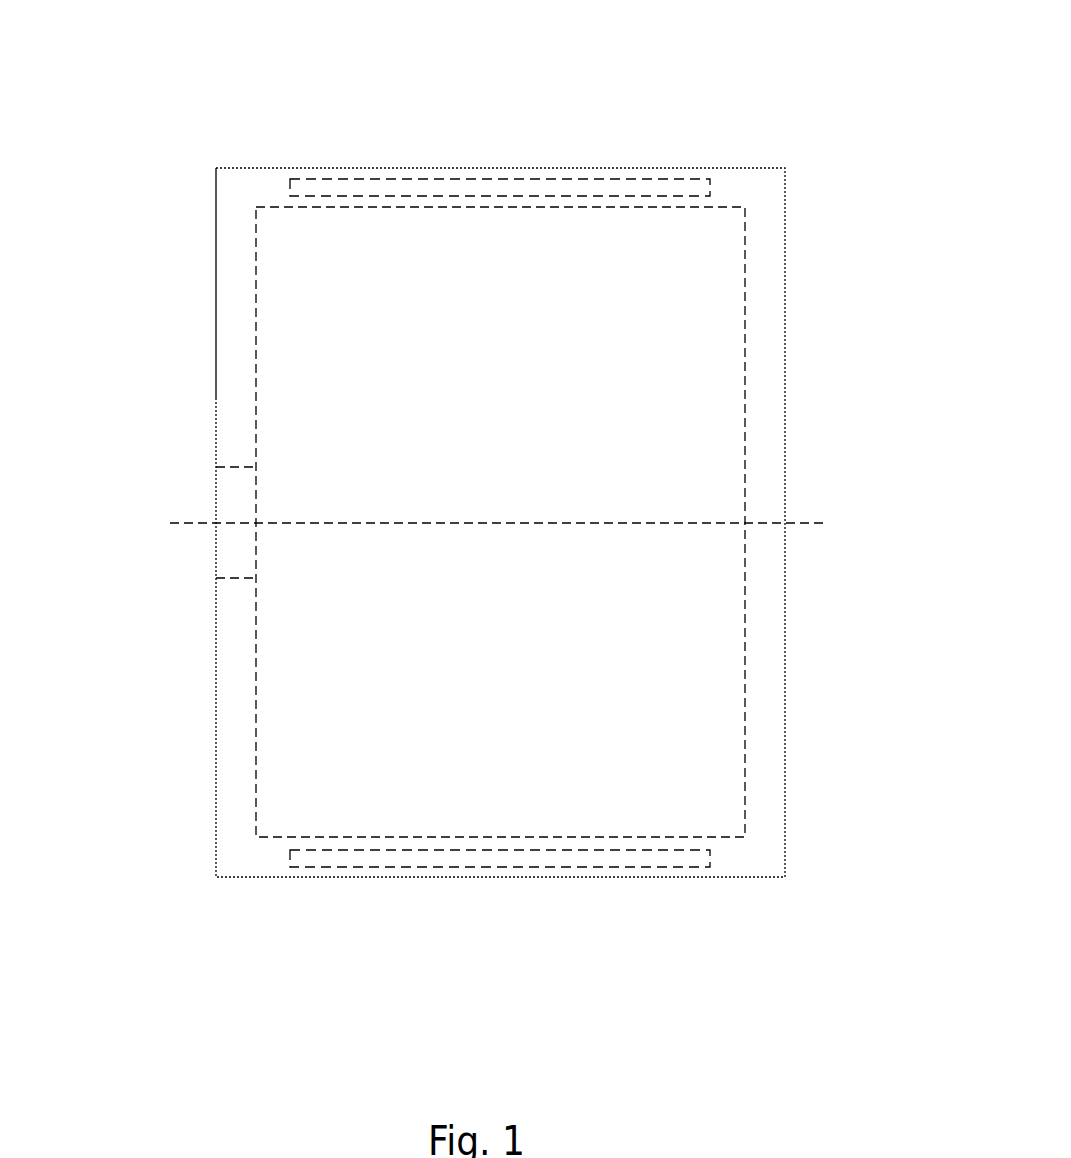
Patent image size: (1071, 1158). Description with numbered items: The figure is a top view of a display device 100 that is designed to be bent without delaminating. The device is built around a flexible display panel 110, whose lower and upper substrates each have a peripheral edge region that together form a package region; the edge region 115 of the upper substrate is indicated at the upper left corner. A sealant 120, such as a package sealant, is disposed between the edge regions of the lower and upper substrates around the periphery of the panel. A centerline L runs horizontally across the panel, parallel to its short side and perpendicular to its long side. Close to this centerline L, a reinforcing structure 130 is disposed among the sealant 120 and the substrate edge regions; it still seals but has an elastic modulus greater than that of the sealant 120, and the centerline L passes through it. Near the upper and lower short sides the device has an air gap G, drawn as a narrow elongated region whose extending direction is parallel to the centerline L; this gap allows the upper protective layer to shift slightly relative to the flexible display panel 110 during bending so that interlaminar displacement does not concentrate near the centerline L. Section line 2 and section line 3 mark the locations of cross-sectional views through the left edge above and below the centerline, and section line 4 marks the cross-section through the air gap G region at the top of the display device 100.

The display device 100 is at (142, 38).
The flexible display panel 110 is at (267, 700).
The edge region 115 is at (238, 229).
The sealant 120 is at (233, 609).
The reinforcing structure 130 is at (227, 495).
The air gap G is at (648, 191).
The centerline L is at (490, 523).
The line 2- 2 is at (281, 438).
The line 3- 3 is at (281, 551).
The line 4- 4 is at (501, 228).